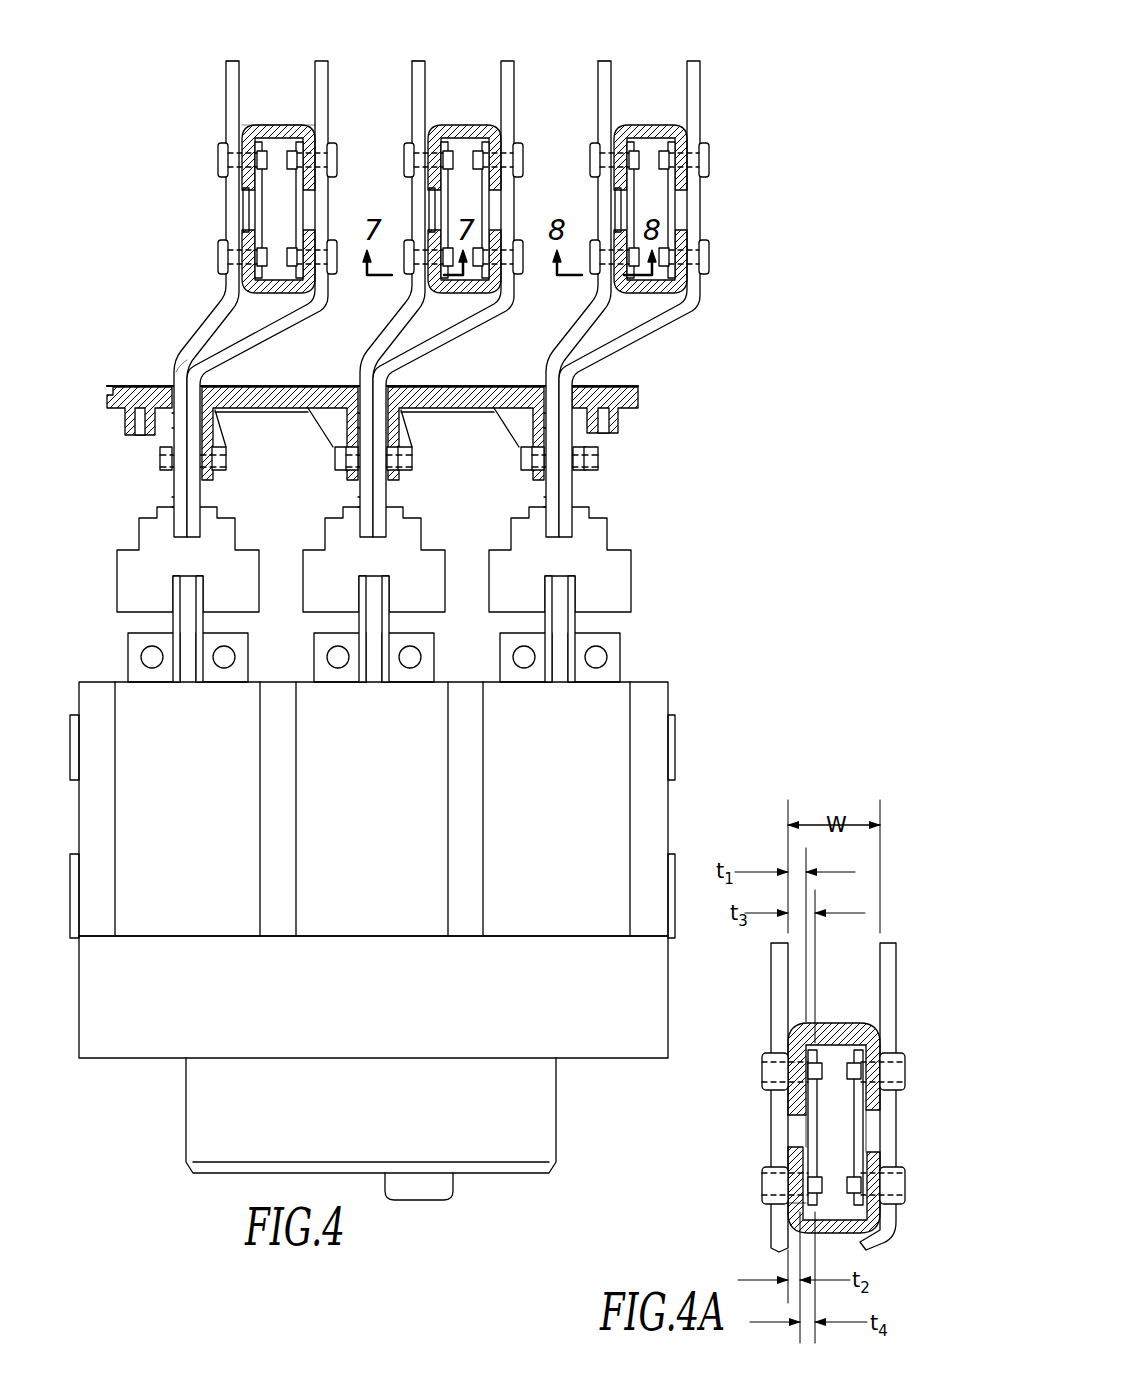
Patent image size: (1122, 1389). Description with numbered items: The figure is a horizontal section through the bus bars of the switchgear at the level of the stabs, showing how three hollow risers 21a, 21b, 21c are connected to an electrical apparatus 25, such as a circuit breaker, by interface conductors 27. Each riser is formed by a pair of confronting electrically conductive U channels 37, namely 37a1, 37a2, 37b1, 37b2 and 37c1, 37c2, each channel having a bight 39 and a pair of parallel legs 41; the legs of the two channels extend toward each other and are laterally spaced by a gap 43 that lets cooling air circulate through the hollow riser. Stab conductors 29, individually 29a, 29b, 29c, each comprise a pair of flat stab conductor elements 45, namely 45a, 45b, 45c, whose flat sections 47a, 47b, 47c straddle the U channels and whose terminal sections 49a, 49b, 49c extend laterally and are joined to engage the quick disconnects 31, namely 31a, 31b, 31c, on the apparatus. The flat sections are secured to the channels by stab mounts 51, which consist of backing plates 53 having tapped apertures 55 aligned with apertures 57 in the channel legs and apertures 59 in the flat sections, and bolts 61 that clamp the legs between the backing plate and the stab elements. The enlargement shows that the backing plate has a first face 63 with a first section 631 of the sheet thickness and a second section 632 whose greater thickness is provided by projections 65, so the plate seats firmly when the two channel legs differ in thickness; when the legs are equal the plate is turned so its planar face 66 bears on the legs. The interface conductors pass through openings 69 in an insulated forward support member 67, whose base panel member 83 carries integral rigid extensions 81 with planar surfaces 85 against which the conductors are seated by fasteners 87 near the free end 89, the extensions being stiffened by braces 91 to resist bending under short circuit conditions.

In FIG. 4, the riser 21a is at (272, 92).
In FIG. 4, the riser 21b is at (455, 92).
In FIG. 4, the riser 21c is at (625, 110).
In FIG. 4, the electrical apparatus 25 is at (656, 822).
In FIG. 4, the interface conductors 27 is at (686, 276).
In FIG. 4, the stab conductors 29 is at (378, 468).
In FIG. 4, the stab conductor 29a is at (229, 460).
In FIG. 4, the stab conductor 29b is at (434, 468).
In FIG. 4, the stab conductor 29c is at (563, 460).
In FIG. 4, the quick disconnects 31 is at (391, 594).
In FIG. 4, the quick disconnect 31a is at (117, 590).
In FIG. 4, the quick disconnect 31b is at (307, 593).
In FIG. 4, the quick disconnect 31c is at (487, 573).
In FIG. 4, the U channels 37 is at (227, 275).
In FIG. 4, the U channel 37a1 is at (270, 190).
In FIG. 4, the U channel 37a2 is at (256, 275).
In FIG. 4, the U channel 37b1 is at (487, 158).
In FIG. 4A, the U channel 37b1 is at (815, 1093).
In FIG. 4, the U channel 37b2 is at (457, 295).
In FIG. 4A, the U channel 37b2 is at (831, 1097).
In FIG. 4, the U channel 37c1 is at (648, 107).
In FIG. 4, the U channel 37c2 is at (663, 276).
In FIG. 4, the bight 39 is at (272, 199).
In FIG. 4, the legs 41 is at (243, 187).
In FIG. 4A, the legs 41 is at (872, 1100).
In FIG. 4, the gap 43 is at (241, 210).
In FIG. 4, the stab conductor elements 45 is at (409, 405).
In FIG. 4, the stab conductor elements 45a is at (256, 275).
In FIG. 4, the stab conductor elements 45b is at (457, 295).
In FIG. 4, the stab conductor elements 45c is at (658, 276).
In FIG. 4, the flat sections 47a is at (228, 62).
In FIG. 4, the flat sections 47b is at (415, 95).
In FIG. 4A, the flat sections 47b is at (772, 990).
In FIG. 4, the flat sections 47c is at (598, 62).
In FIG. 4, the terminal sections 49a is at (200, 493).
In FIG. 4, the terminal sections 49b is at (353, 493).
In FIG. 4, the terminal sections 49c is at (550, 497).
In FIG. 4, the stab mounts 51 is at (185, 112).
In FIG. 4, the backing plates 53 is at (241, 210).
In FIG. 4, the apertures 55 is at (279, 140).
In FIG. 4, the apertures 57 is at (254, 140).
In FIG. 4, the apertures 59 is at (235, 145).
In FIG. 4, the bolts 61 is at (270, 209).
In FIG. 4A, the first face 63 is at (783, 1127).
In FIG. 4A, the first section 631 is at (783, 1127).
In FIG. 4A, the second section 632 is at (795, 1110).
In FIG. 4A, the projections 65 is at (805, 1192).
In FIG. 4, the planar face 66 is at (443, 193).
In FIG. 4A, the planar face 66 is at (822, 1135).
In FIG. 4, the forward support member 67 is at (650, 410).
In FIG. 4, the openings 69 is at (180, 365).
In FIG. 4, the rigid extensions 81 is at (262, 423).
In FIG. 4, the base panel member 83 is at (112, 388).
In FIG. 4, the planar surfaces 85 is at (644, 428).
In FIG. 4, the fasteners 87 is at (227, 462).
In FIG. 4, the free end 89 is at (213, 480).
In FIG. 4, the braces 91 is at (527, 423).